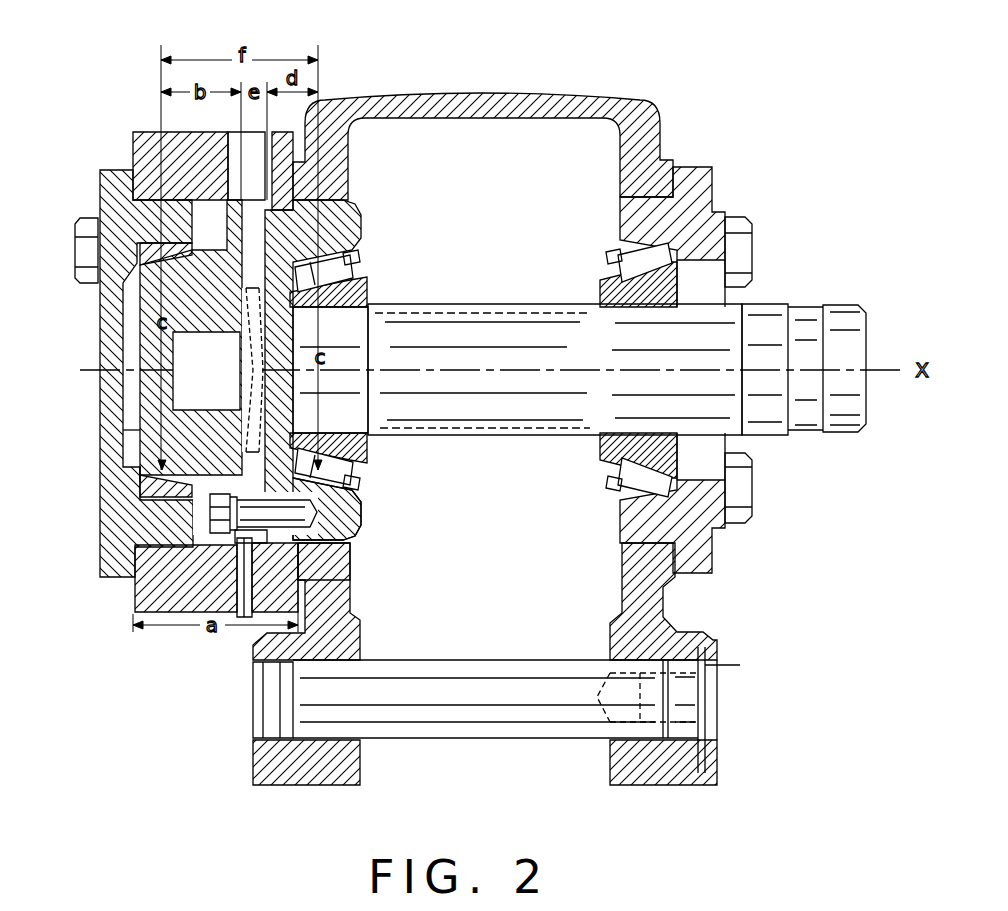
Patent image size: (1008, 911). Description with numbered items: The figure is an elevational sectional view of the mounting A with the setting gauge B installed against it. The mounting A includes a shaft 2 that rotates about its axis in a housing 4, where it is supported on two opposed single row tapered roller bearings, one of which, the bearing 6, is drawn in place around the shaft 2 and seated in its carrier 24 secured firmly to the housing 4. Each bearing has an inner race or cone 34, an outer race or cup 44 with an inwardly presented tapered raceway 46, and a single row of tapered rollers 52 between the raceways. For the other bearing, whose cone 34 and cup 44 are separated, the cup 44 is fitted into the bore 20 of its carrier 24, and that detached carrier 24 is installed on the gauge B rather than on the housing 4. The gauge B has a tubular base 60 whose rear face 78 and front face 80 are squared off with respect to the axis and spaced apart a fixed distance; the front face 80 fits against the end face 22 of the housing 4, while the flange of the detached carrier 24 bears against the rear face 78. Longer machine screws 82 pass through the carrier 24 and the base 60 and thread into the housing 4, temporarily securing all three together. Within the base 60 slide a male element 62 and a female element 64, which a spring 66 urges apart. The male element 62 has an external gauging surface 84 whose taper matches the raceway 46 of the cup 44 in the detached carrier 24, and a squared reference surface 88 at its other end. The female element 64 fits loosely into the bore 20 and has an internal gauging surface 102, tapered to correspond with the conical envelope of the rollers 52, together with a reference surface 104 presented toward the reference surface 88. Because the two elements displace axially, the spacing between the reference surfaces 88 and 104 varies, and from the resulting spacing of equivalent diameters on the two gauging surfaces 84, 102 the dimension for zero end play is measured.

The shaft 2 is at (528, 436).
The housing 4 is at (645, 99).
The tapered roller bearing 6 is at (606, 483).
The bore 20 is at (347, 527).
The end face 22 is at (300, 567).
The carrier 24 is at (693, 557).
The cone 34 is at (370, 455).
The cup 44 is at (140, 500).
The tapered raceway 46 is at (140, 438).
The tapered rollers 52 is at (362, 482).
The base 60 is at (150, 152).
The male element 62 is at (140, 345).
The female element 64 is at (343, 215).
The spring 66 is at (247, 330).
The rear face 78 is at (135, 593).
The front face 80 is at (303, 598).
The machine screws 82 is at (83, 252).
The external gauging surface 84 is at (100, 180).
The reference surface 88 is at (300, 183).
The internal gauging surface 102 is at (357, 267).
The reference surface 104 is at (365, 500).
The mounting A is at (580, 84).
The setting gauge B is at (150, 123).